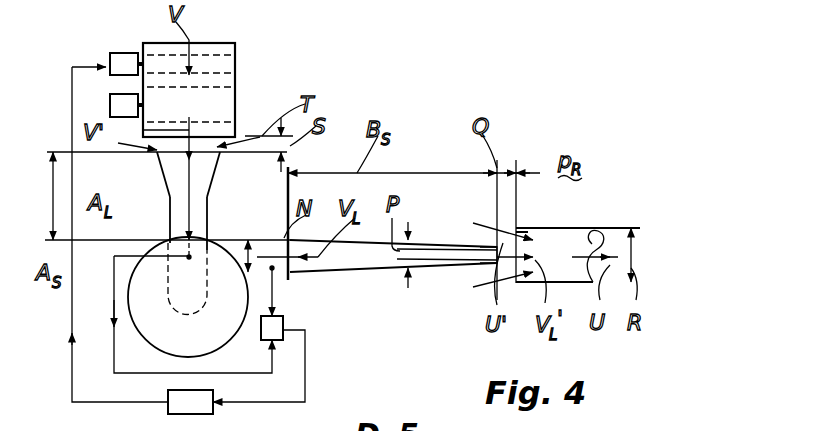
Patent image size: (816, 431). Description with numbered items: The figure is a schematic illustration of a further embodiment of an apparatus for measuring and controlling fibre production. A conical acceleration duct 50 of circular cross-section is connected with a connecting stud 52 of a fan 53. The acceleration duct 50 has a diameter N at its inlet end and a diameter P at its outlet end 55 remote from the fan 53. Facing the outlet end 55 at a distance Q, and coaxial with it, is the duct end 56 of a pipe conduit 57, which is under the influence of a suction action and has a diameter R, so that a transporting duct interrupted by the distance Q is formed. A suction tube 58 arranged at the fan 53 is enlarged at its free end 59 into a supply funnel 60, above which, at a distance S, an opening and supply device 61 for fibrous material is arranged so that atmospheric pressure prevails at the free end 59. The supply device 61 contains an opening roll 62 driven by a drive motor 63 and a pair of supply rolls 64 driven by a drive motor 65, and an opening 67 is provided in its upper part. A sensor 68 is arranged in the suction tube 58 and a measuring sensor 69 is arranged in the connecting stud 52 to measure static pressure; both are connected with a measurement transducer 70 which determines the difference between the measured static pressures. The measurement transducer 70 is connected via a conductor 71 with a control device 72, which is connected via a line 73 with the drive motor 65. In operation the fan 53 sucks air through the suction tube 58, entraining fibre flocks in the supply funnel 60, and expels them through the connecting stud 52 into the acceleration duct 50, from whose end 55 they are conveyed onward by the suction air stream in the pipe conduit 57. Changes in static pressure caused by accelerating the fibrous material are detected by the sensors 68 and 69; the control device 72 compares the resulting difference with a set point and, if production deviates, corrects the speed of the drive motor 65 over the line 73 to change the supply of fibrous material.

The conical acceleration duct 50 is at (392, 270).
The connecting stud 52 is at (247, 240).
The fan 53 is at (155, 350).
The outlet end 55 is at (488, 250).
The duct end 56 is at (520, 232).
The pipe conduit 57 is at (575, 228).
The suction tube 58 is at (170, 212).
The free end 59 is at (157, 156).
The supply funnel 60 is at (215, 178).
The opening and supply device 61 is at (235, 52).
The opening roll 62 is at (227, 100).
The drive motor 63 is at (120, 106).
The pair of supply rolls 64 is at (228, 66).
The drive motor 65 is at (120, 62).
The opening 67 is at (213, 50).
The sensor 68 is at (188, 257).
The measuring sensor 69 is at (272, 270).
The measurement transducer 70 is at (276, 326).
The conductor 71 is at (305, 355).
The control device 72 is at (213, 410).
The line 73 is at (72, 378).